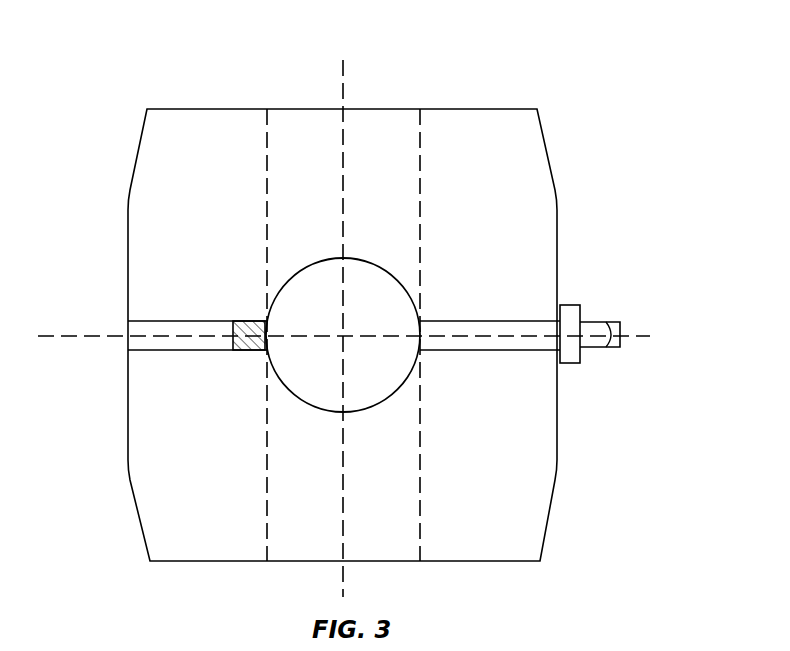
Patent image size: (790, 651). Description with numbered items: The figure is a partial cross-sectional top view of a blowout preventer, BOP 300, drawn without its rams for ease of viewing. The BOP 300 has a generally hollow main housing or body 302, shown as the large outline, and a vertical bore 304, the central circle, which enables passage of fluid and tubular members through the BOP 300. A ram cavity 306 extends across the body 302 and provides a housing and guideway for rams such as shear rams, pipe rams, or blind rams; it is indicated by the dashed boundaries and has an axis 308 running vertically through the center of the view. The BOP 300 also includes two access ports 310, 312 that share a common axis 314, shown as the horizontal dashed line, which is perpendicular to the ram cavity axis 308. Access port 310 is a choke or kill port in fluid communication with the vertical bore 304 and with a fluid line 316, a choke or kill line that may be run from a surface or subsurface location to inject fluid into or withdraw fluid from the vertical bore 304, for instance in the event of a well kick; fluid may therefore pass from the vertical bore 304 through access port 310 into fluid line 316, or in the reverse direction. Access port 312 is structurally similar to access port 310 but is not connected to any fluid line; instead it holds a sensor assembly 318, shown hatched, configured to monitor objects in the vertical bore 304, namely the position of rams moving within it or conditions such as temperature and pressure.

The BOP 300 is at (128, 77).
The body 302 is at (497, 172).
The vertical bore 304 is at (363, 259).
The ram cavity 306 is at (418, 116).
The axis 308 is at (342, 68).
The access port 310 is at (474, 320).
The access port 312 is at (178, 321).
The axis 314 is at (92, 333).
The fluid line 316 is at (592, 322).
The sensor assembly 318 is at (247, 350).